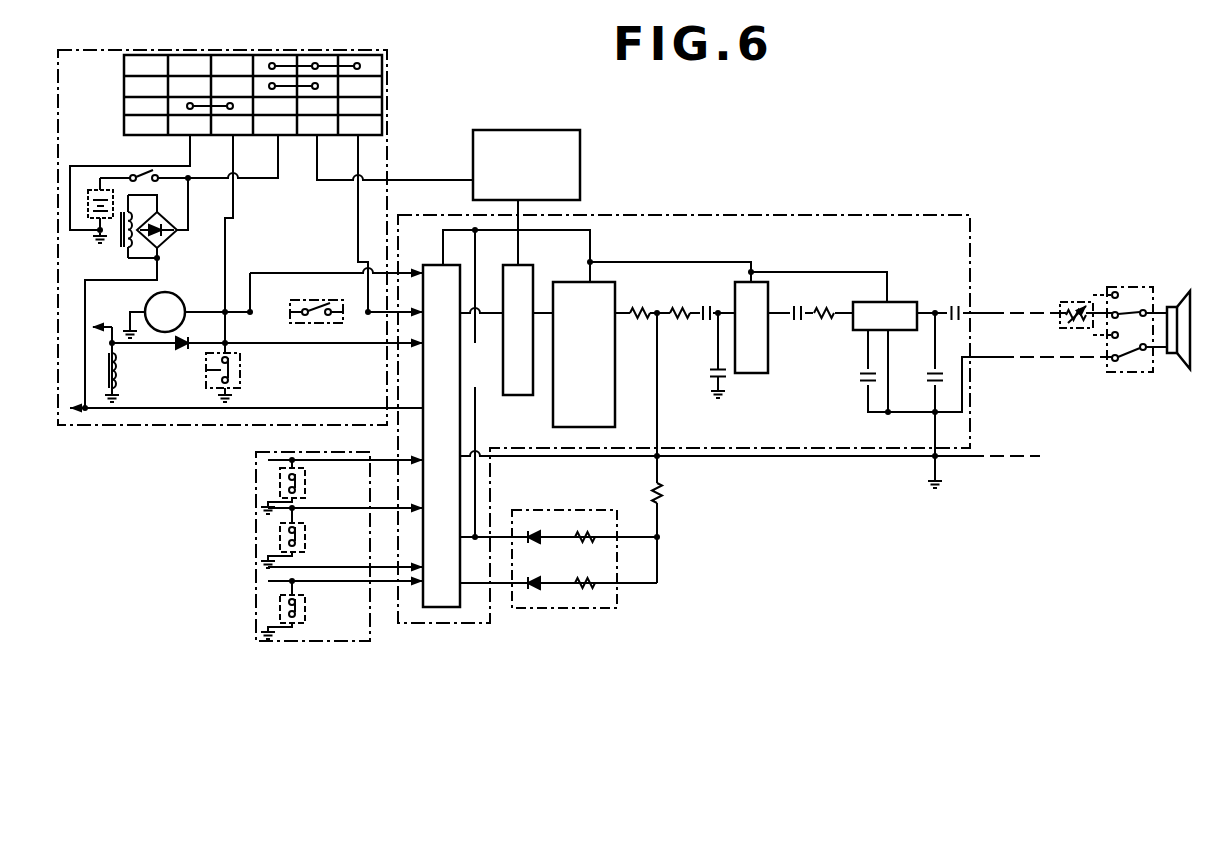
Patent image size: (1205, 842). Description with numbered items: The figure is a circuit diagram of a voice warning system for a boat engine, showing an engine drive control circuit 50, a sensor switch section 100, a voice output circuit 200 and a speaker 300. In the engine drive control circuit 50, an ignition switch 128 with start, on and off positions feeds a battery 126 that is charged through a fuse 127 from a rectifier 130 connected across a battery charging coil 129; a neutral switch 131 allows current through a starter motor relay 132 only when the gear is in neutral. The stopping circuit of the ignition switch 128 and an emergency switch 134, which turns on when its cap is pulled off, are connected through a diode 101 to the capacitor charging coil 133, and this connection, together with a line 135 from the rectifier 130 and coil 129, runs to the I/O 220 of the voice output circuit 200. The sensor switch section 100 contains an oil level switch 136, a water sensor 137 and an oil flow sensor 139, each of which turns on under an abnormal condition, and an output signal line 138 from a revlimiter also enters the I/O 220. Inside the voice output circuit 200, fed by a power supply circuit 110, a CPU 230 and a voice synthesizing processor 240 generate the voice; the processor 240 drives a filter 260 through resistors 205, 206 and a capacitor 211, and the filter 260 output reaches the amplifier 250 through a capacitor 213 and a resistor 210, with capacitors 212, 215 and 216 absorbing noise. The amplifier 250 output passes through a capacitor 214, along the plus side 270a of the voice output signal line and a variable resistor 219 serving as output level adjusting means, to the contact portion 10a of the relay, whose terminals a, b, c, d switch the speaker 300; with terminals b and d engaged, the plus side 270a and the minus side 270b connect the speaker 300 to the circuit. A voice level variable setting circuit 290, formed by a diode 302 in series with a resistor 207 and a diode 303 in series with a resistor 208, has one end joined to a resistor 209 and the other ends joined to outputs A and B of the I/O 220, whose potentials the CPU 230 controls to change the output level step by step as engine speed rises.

The engine drive control circuit 50 is at (387, 70).
The ignition switch 128 is at (124, 86).
The battery 126 is at (95, 190).
The fuse 127 is at (143, 172).
The battery charging coil 129 is at (120, 243).
The rectifier 130 is at (176, 226).
The neutral switch 131 is at (306, 298).
The starter motor relay RY2 132 is at (176, 293).
The capacitor charging coil 133 is at (118, 366).
The diode 101 is at (183, 350).
The emergency switch 134 is at (232, 353).
The line 135 is at (260, 407).
The power supply circuit 110 is at (582, 147).
The voice output circuit 200 is at (670, 215).
The I/O 220 is at (430, 265).
The central processing unit 230 is at (535, 278).
The voice synthesizing processor 240 is at (603, 282).
The resistor 205 is at (640, 308).
The resistor 206 is at (688, 308).
The capacitor 211 is at (706, 322).
The capacitor 212 is at (712, 376).
The filter 260 is at (753, 272).
The capacitor 213 is at (797, 321).
The resistor 210 is at (824, 308).
The amplifier 250 is at (900, 302).
The capacitor 214 is at (953, 308).
The capacitor 215 is at (858, 378).
The capacitor 216 is at (930, 378).
The resistor 209 is at (663, 490).
The voice level variable setting circuit 290 is at (617, 600).
The diode 302 is at (537, 529).
The resistor 207 is at (596, 530).
The diode 303 is at (536, 590).
The resistor 208 is at (587, 590).
The plus side of voice output signal line 270a is at (1000, 312).
The minus side of voice output signal line 270b is at (1000, 358).
The variable resistor 219 is at (1068, 302).
The contact portion 10a is at (1148, 287).
The terminal a is at (1115, 292).
The normally-on terminal b is at (1119, 313).
The terminal c is at (1112, 336).
The normally-on terminal d is at (1112, 359).
The speaker 300 is at (1180, 362).
The sensor switch section 100 is at (256, 626).
The oil level switch 136 is at (280, 481).
The water sensor 137 is at (280, 534).
The output signal line 138 is at (339, 566).
The oil flow sensor 139 is at (280, 604).